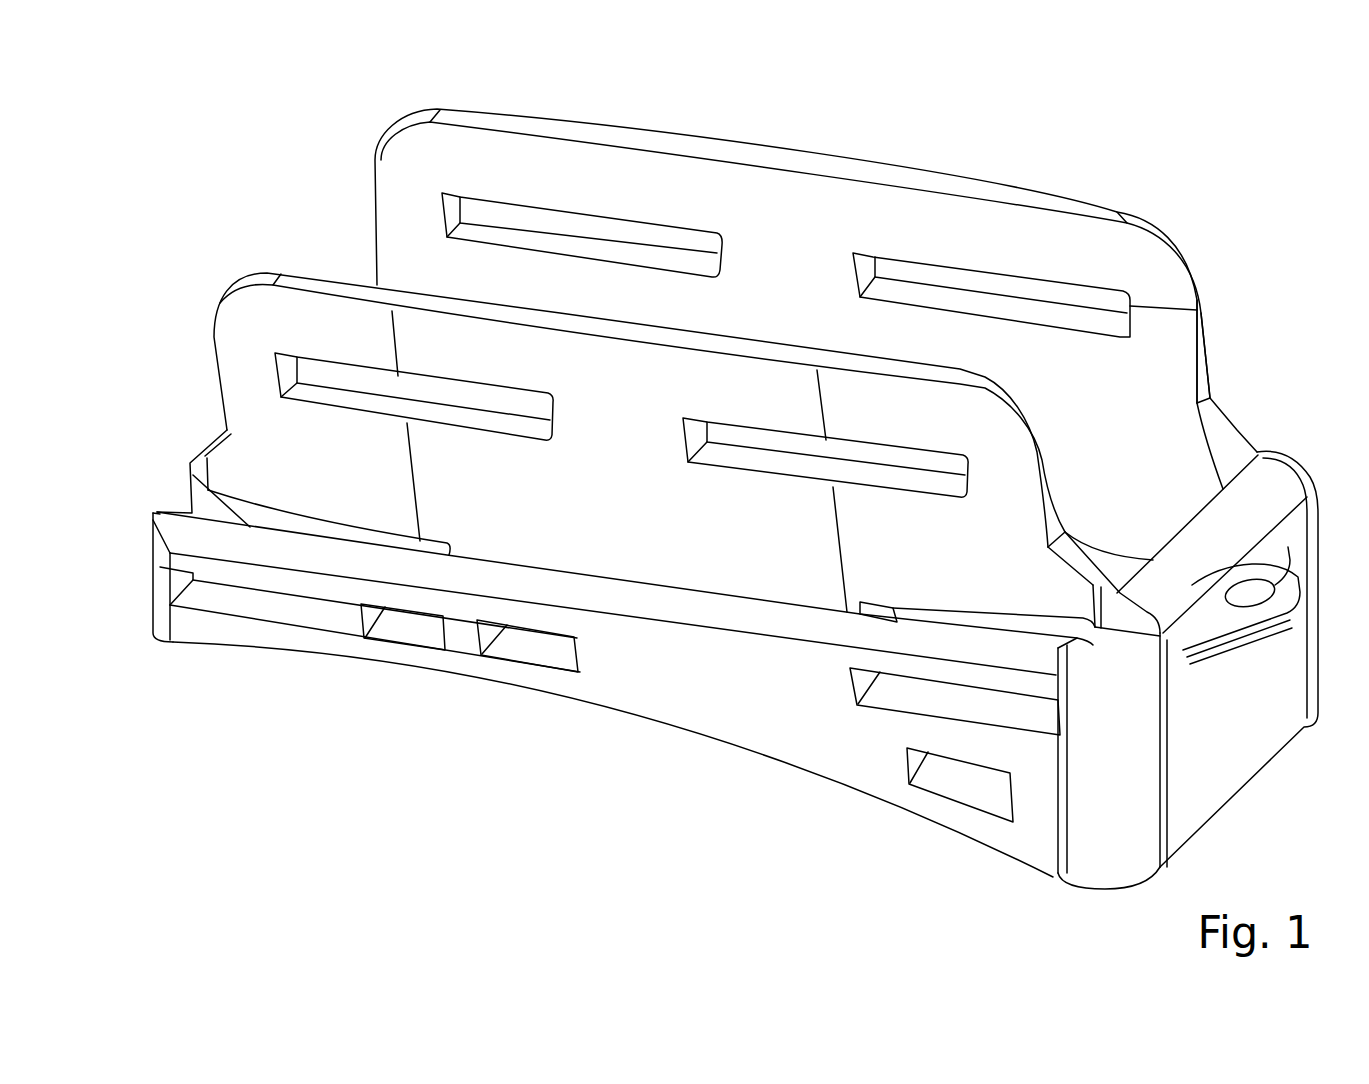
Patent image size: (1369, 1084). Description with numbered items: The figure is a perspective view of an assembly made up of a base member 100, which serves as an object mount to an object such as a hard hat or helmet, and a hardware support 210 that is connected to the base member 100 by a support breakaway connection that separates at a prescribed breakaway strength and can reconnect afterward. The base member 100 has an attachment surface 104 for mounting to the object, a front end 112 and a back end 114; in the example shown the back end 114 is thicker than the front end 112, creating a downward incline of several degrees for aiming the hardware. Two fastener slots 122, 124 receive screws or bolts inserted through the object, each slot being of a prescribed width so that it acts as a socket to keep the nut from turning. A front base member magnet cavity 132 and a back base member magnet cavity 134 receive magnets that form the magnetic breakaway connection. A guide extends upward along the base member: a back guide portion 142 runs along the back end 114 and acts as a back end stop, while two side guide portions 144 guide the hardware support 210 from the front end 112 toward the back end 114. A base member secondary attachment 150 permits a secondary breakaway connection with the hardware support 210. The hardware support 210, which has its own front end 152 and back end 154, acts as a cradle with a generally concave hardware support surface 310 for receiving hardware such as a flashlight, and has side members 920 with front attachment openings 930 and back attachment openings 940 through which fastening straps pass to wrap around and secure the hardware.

The base member 100 is at (347, 867).
The attachment surface 104 is at (680, 728).
The front end 112 is at (177, 490).
The back end 114 is at (1257, 730).
The fastener slot 122 is at (552, 646).
The fastener slot 124 is at (965, 790).
The front base member magnet cavity 132 is at (373, 610).
The back base member magnet cavity 134 is at (907, 690).
The back guide portion 142 is at (1283, 507).
The side guide portion 144 is at (277, 543).
The base member secondary attachment 150 is at (1247, 603).
The front end 152 is at (187, 383).
The back end 154 is at (1240, 337).
The hardware support 210 is at (330, 80).
The hardware support surface 310 is at (1077, 487).
The side members 920 is at (430, 150).
The front attachment openings 930 is at (565, 220).
The back attachment openings 940 is at (1020, 285).